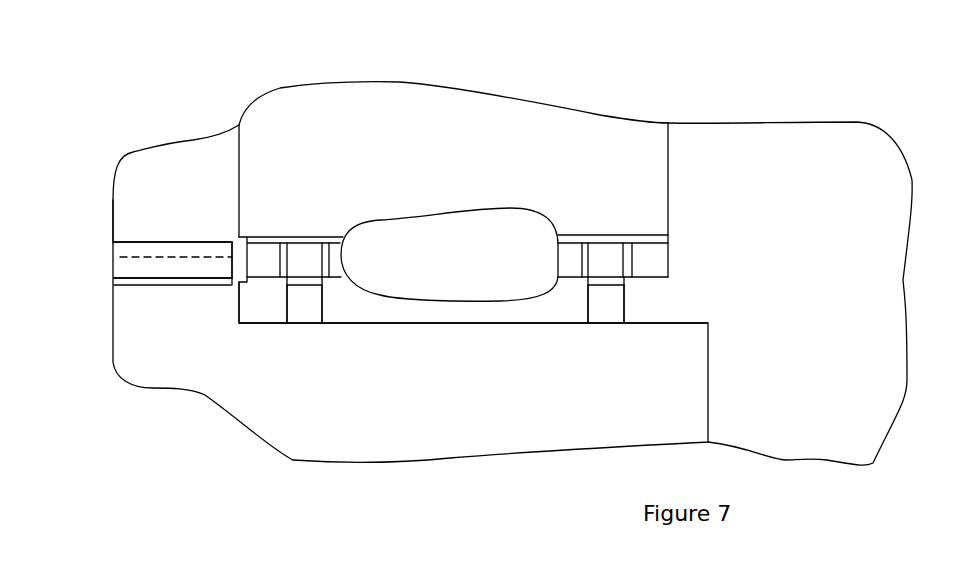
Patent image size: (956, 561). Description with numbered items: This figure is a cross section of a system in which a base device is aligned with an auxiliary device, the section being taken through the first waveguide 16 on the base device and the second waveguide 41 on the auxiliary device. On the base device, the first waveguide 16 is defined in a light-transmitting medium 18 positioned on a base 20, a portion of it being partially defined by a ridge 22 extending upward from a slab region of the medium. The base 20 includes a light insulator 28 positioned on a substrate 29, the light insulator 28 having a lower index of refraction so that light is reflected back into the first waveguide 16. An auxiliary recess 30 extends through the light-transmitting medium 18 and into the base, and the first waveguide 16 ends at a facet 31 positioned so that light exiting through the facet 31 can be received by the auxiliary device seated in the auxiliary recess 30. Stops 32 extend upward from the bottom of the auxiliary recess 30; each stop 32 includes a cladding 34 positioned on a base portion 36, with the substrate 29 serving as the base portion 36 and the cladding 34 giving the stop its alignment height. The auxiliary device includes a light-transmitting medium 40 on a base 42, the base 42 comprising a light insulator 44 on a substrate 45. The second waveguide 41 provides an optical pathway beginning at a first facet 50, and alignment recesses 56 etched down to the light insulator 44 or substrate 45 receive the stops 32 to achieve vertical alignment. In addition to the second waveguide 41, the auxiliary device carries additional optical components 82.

The first waveguide 16 is at (117, 226).
The light-transmitting medium 18 is at (107, 278).
The base 20 is at (107, 280).
The ridge 22 is at (130, 257).
The light insulator 28 is at (140, 283).
The substrate 29 is at (273, 425).
The auxiliary recess 30 is at (248, 325).
The facet 31 is at (232, 262).
The stops 32 is at (337, 310).
The cladding 34 is at (307, 285).
The base portion 36 is at (305, 311).
The light-transmitting medium 40 is at (567, 257).
The second waveguide 41 is at (235, 288).
The base 42 is at (677, 243).
The light insulator 44 is at (265, 240).
The substrate 45 is at (330, 110).
The first facet 50 is at (251, 255).
The alignment recesses 56 is at (329, 258).
The optical components 82 is at (428, 217).